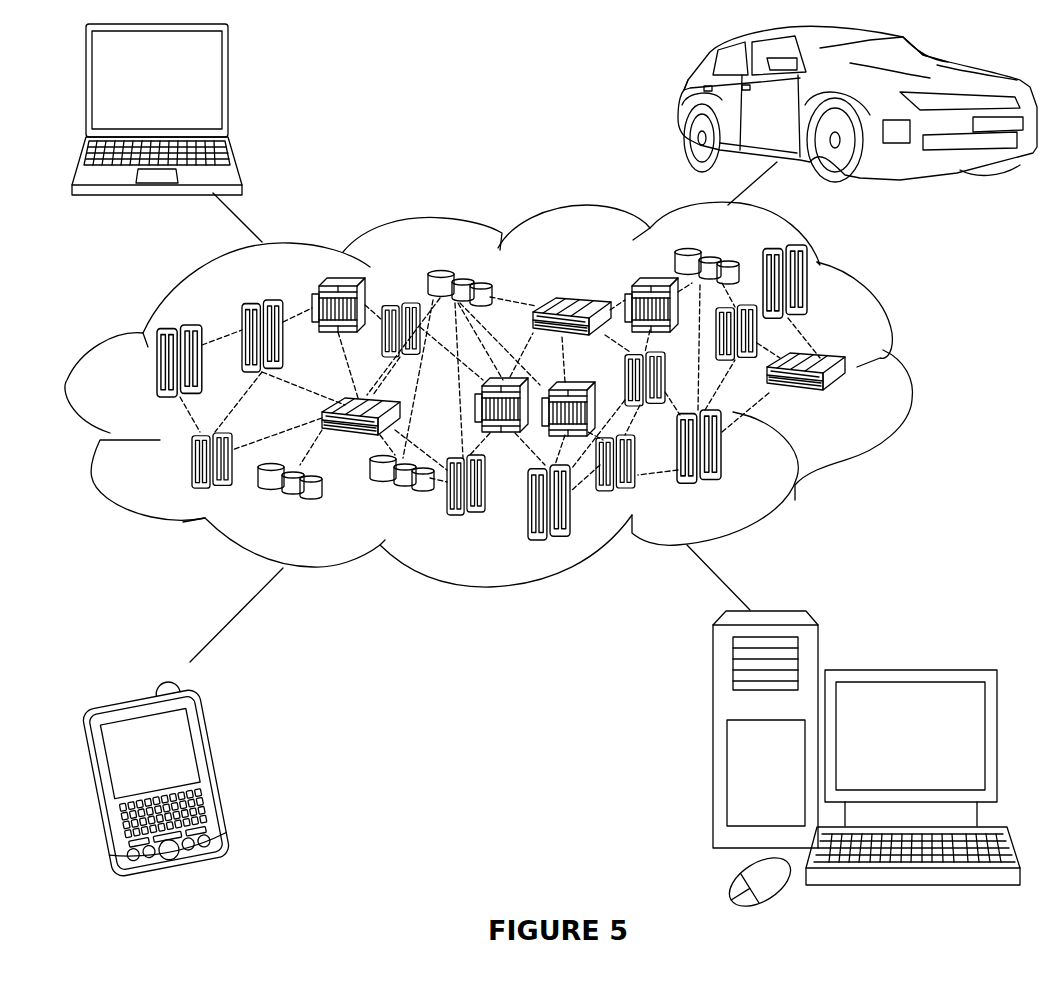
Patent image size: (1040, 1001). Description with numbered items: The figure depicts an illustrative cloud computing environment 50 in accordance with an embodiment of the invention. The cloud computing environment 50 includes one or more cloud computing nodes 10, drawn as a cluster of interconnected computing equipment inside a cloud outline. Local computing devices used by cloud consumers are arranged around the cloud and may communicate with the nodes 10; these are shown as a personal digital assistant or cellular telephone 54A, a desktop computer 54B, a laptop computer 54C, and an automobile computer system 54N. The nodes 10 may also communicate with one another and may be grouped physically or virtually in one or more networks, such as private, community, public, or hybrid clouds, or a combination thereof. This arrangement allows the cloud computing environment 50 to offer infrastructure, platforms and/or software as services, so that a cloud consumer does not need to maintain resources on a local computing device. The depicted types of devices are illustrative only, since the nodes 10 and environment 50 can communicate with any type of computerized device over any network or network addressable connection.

The cloud computing nodes 10 is at (856, 405).
The cloud computing environment 50 is at (910, 372).
The personal digital assistant or cellular telephone 54A is at (217, 768).
The desktop computer 54B is at (907, 668).
The laptop computer 54C is at (228, 90).
The automobile computer system 54N is at (680, 100).